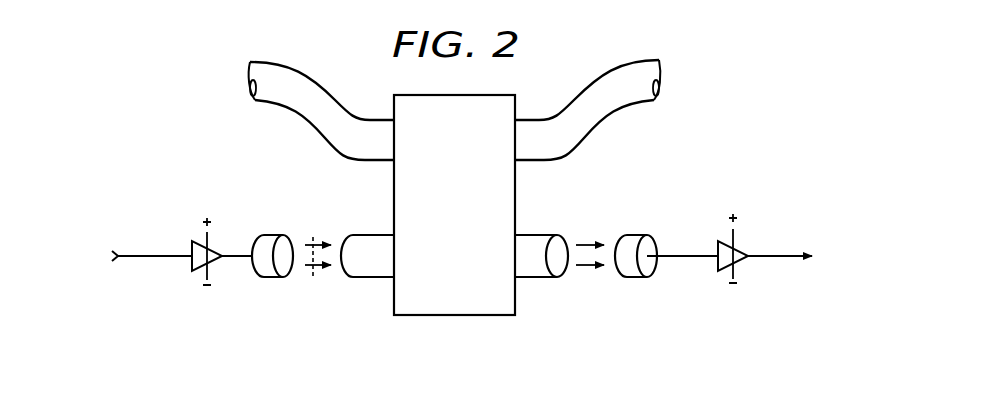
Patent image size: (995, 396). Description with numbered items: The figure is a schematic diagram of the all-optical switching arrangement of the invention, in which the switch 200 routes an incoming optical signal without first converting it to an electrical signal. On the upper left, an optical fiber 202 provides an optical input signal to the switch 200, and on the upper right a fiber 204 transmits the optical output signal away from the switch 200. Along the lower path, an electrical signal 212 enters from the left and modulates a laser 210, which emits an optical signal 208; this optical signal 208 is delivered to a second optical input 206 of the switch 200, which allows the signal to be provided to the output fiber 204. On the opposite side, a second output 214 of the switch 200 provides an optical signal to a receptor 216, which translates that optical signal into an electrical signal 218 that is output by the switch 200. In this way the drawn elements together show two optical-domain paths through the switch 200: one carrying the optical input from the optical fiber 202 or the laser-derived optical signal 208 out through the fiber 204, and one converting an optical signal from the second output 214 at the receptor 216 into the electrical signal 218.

The switch 200 is at (212, 85).
The optical fiber 202 is at (300, 62).
The fiber 204 is at (612, 62).
The second optical input 206 is at (378, 278).
The optical signal 208 is at (313, 237).
The laser 210 is at (272, 278).
The electrical signal 212 is at (157, 258).
The second output 214 is at (535, 277).
The receptor 216 is at (637, 278).
The electrical signal 218 is at (777, 257).